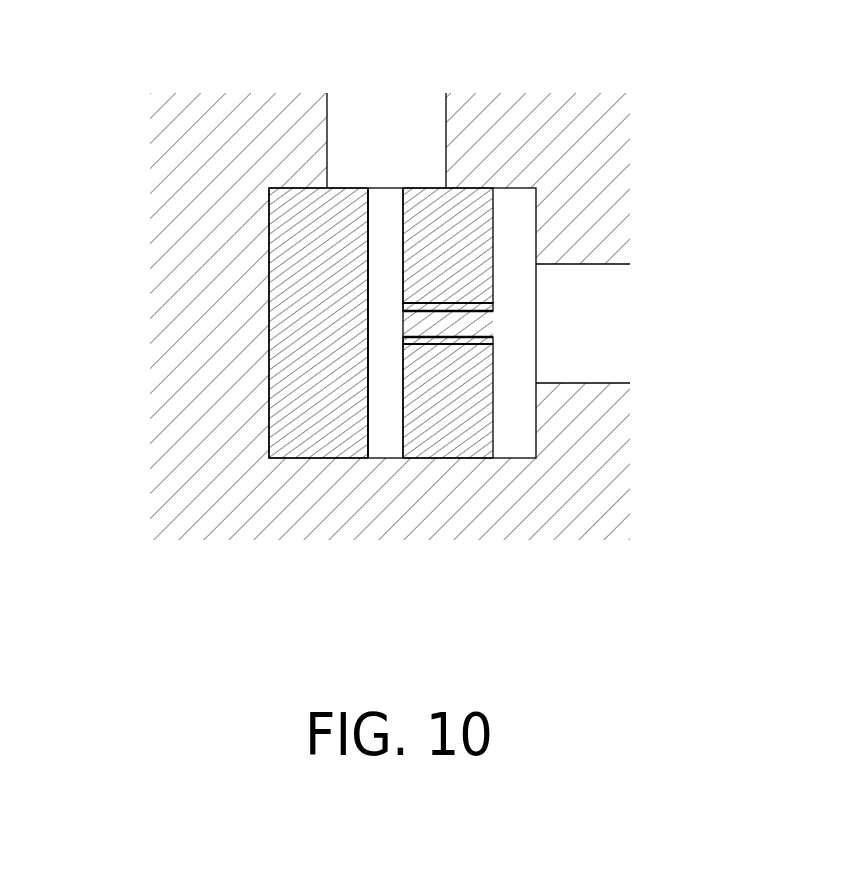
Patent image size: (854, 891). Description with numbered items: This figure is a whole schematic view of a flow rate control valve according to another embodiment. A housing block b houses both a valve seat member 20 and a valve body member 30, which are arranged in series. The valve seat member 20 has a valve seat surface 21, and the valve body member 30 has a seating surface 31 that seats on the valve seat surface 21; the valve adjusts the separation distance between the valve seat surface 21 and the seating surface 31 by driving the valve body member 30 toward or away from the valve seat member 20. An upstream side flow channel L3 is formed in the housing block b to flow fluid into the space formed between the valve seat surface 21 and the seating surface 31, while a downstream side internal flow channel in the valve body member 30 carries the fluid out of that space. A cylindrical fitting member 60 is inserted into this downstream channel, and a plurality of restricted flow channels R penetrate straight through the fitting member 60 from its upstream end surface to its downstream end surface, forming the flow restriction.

The valve seat member 20 is at (313, 458).
The valve seat surface 21 is at (370, 283).
The valve body member 30 is at (437, 458).
The seating surface 31 is at (403, 443).
The fitting member 60 is at (478, 328).
The upstream side flow channel L3 is at (390, 135).
The restricted flow channel R is at (443, 312).
The housing block b is at (575, 513).